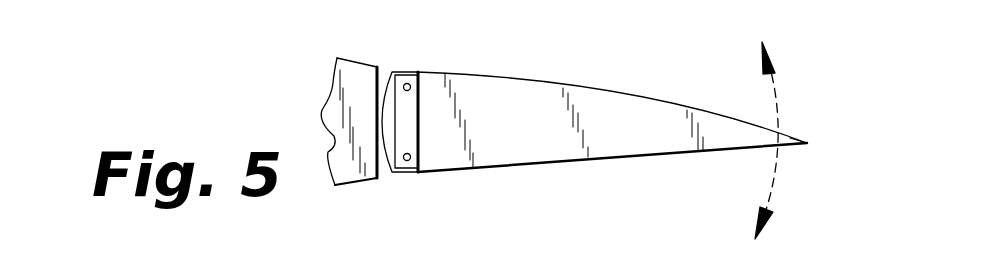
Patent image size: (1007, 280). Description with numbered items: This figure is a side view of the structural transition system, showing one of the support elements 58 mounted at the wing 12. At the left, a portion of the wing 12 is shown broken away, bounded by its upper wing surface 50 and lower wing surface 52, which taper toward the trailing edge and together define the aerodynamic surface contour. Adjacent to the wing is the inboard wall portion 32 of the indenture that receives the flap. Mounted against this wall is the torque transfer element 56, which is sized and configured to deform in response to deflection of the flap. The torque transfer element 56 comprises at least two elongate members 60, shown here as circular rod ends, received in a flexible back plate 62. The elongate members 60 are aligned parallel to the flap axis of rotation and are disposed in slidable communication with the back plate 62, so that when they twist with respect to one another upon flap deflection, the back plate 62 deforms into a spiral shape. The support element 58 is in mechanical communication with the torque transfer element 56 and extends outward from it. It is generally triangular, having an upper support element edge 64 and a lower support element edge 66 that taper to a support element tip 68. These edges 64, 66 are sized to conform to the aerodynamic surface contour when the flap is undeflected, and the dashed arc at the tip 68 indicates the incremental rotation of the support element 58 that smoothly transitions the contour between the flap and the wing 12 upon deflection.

The wing 12 is at (333, 83).
The upper wing surface 50 is at (352, 58).
The lower wing surface 52 is at (349, 183).
The inboard wall portion 32 is at (383, 72).
The torque transfer element 56 is at (419, 136).
The support element 58 is at (588, 98).
The elongate member 60 is at (409, 83).
The flexible back plate 62 is at (410, 112).
The upper support element edge 64 is at (647, 95).
The lower support element edge 66 is at (648, 156).
The support element tip 68 is at (809, 144).